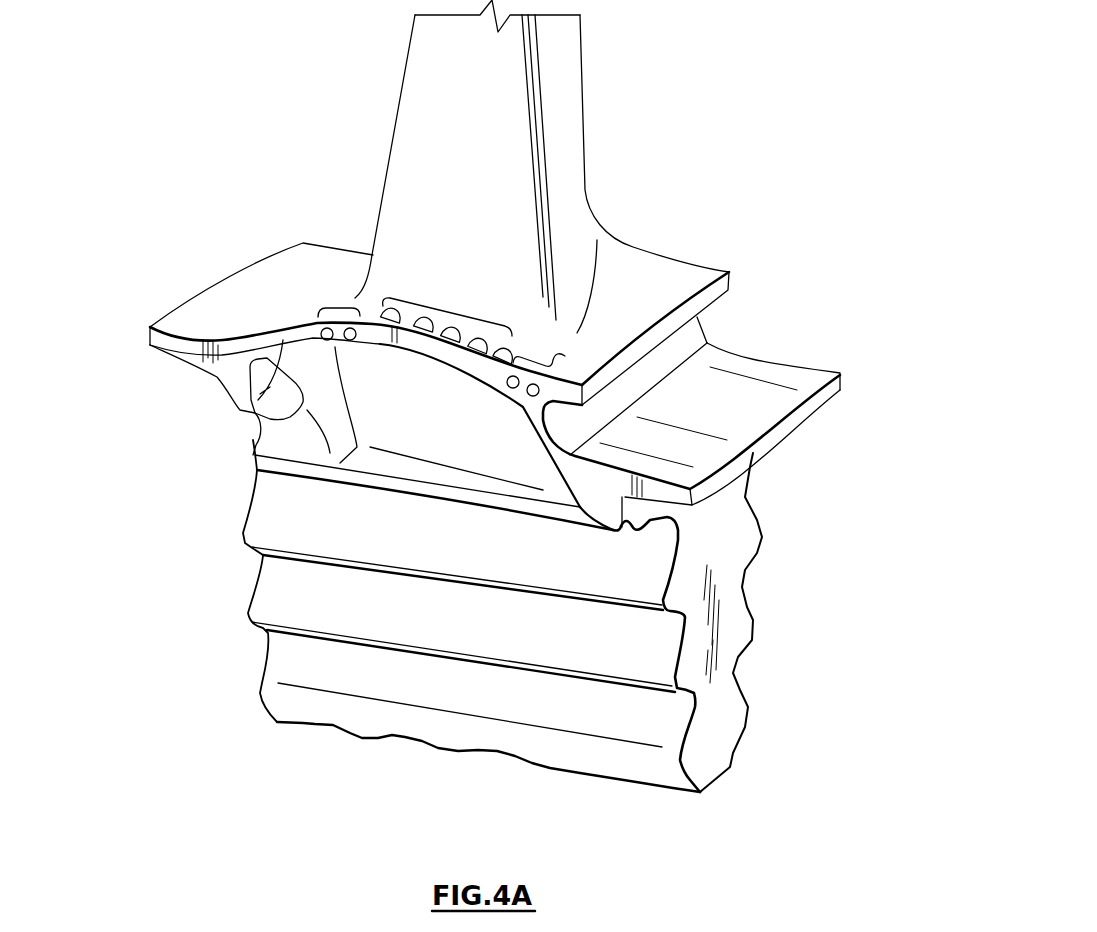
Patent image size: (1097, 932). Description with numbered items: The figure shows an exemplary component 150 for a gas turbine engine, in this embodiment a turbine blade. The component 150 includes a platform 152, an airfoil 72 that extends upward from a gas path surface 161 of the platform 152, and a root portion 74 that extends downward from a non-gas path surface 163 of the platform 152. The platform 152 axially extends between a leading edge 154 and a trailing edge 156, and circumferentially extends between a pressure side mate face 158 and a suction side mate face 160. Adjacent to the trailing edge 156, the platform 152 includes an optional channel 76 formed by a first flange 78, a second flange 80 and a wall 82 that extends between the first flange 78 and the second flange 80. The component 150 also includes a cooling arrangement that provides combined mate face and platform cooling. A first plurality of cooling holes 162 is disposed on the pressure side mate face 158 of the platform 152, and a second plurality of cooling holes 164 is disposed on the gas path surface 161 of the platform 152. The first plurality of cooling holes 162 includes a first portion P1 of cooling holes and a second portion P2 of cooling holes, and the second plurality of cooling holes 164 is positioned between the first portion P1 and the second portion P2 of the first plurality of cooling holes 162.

The component 150 is at (460, 396).
The airfoil 72 is at (588, 195).
The root portion 74 is at (727, 630).
The channel 76 is at (740, 315).
The first flange 78 is at (733, 288).
The second flange 80 is at (787, 382).
The wall 82 is at (707, 343).
The platform 152 is at (460, 358).
The leading edge 154 is at (124, 304).
The trailing edge 156 is at (708, 399).
The pressure side mate face 158 is at (255, 414).
The suction side mate face 160 is at (713, 271).
The gas path surface 161 is at (628, 283).
The first plurality of cooling holes 162 is at (274, 308).
The non-gas path surface 163 is at (448, 358).
The second plurality of cooling holes 164 is at (433, 301).
The first portion of cooling holes P1 is at (338, 308).
The second portion of cooling holes P2 is at (554, 357).